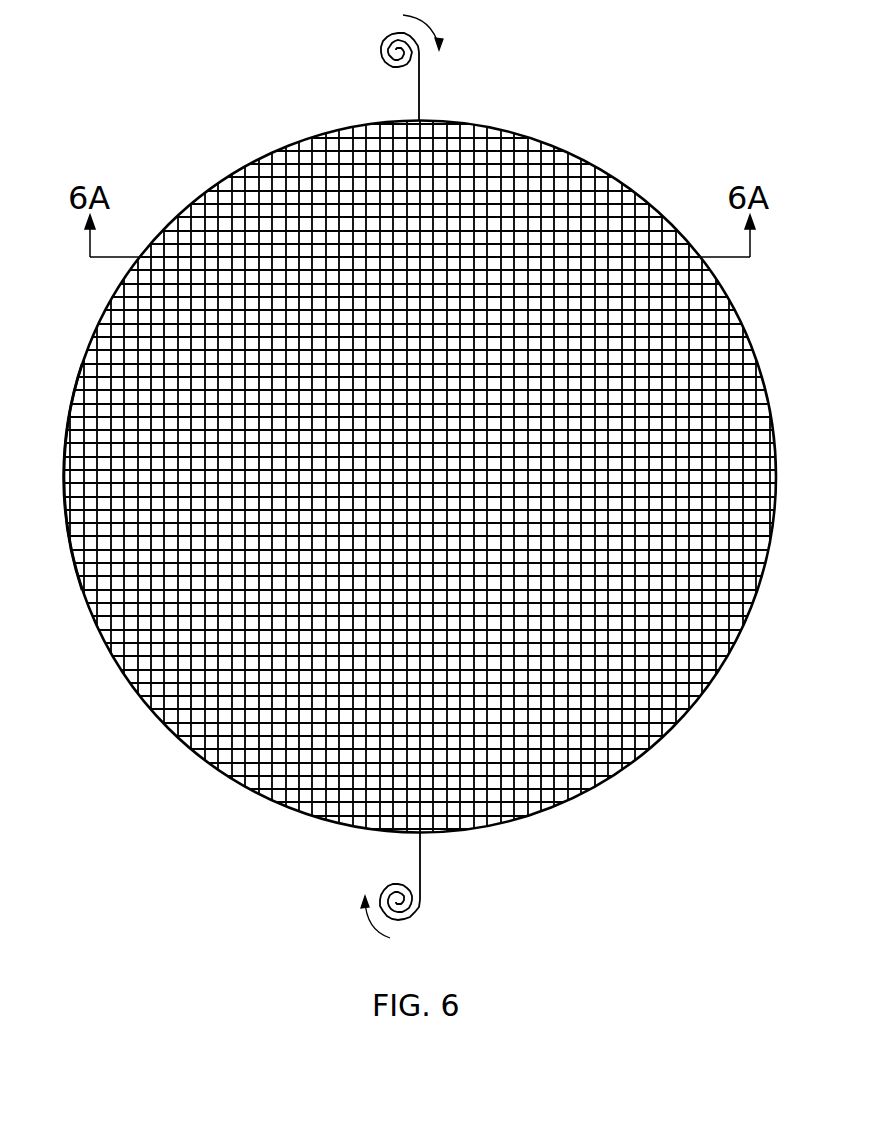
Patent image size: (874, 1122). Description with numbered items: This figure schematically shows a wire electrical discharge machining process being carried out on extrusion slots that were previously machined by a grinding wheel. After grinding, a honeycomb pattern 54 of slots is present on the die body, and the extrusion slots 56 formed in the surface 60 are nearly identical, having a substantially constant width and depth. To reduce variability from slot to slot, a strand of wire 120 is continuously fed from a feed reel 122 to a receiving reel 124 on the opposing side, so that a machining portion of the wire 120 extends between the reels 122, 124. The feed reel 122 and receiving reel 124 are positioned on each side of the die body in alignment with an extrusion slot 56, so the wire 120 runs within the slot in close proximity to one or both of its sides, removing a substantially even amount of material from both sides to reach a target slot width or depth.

The honeycomb pattern 54 is at (85, 367).
The extrusion slot 56 is at (78, 559).
The surface 60 is at (284, 701).
The wire 120 is at (419, 110).
The feed reel 122 is at (366, 47).
The receiving reel 124 is at (428, 905).